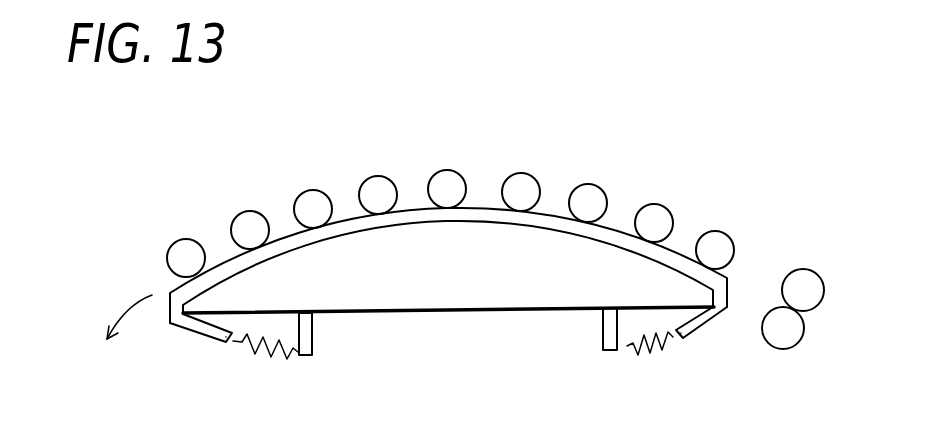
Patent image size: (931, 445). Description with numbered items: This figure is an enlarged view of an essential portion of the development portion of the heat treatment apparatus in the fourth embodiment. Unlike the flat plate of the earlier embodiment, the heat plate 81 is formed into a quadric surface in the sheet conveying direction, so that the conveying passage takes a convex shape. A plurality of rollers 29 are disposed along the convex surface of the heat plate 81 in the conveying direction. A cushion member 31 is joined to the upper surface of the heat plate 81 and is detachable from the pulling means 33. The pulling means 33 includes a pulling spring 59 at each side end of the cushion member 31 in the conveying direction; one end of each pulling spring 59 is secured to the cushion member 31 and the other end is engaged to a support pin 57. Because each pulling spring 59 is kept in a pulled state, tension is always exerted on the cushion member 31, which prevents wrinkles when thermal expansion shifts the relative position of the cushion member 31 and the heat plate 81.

The rollers 29 is at (598, 182).
The cushion member 31 is at (733, 277).
The pulling means 33 is at (672, 347).
The support pin 57 is at (313, 335).
The pulling spring 59 is at (265, 357).
The heat plate 81 is at (442, 295).